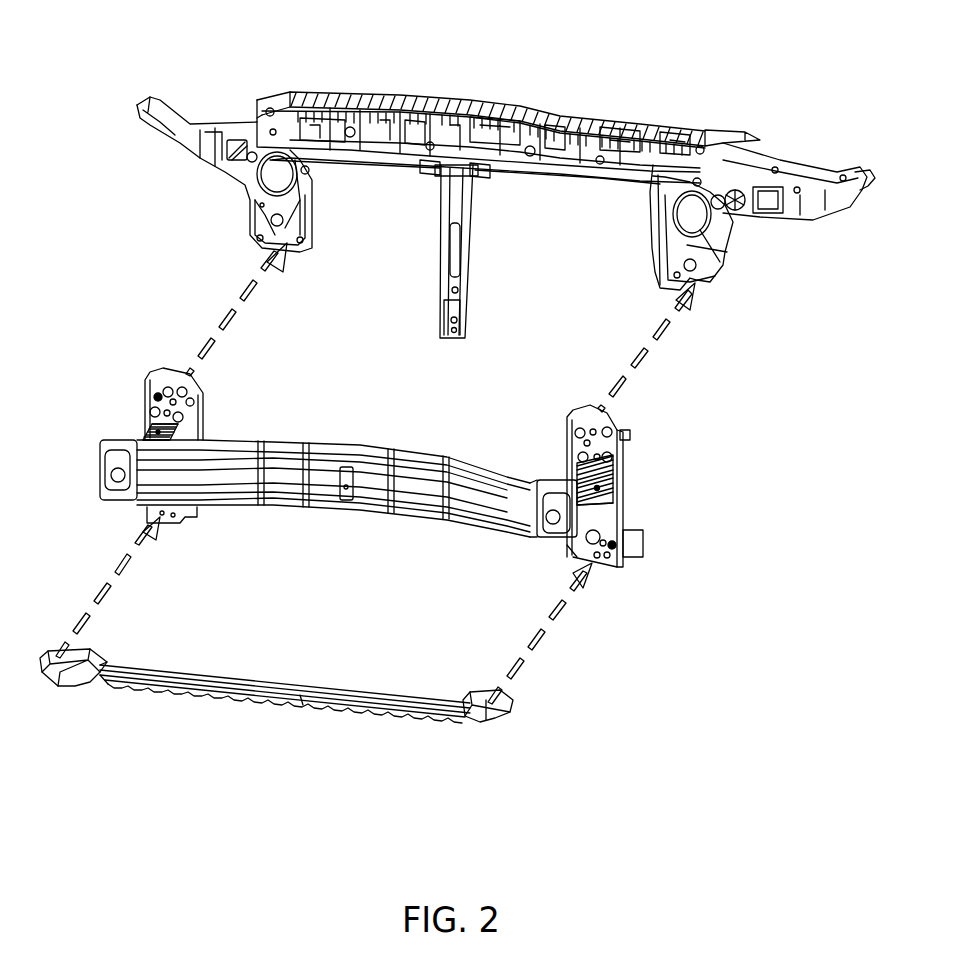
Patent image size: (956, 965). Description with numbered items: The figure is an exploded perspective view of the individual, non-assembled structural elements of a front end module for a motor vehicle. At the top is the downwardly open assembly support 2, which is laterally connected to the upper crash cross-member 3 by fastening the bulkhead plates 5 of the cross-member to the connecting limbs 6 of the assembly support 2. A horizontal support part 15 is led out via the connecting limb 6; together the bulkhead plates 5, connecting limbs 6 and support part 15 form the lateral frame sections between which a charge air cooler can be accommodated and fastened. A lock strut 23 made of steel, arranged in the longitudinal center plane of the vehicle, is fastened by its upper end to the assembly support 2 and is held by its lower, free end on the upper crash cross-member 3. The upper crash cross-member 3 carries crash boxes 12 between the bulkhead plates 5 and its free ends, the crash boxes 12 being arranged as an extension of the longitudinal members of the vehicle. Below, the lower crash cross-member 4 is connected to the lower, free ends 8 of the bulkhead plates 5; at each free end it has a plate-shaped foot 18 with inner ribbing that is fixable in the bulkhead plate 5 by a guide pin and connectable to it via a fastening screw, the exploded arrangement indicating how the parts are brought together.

The assembly support 2 is at (448, 110).
The upper crash cross-member 3 is at (337, 455).
The lower crash cross-member 4 is at (307, 698).
The bulkhead plate 5 is at (157, 397).
The connecting limb 6 is at (275, 207).
The lower free end 8 is at (138, 514).
The crash box 12 is at (152, 433).
The horizontal support part 15 is at (797, 190).
The plate-shaped foot 18 is at (522, 702).
The lock strut 23 is at (440, 297).